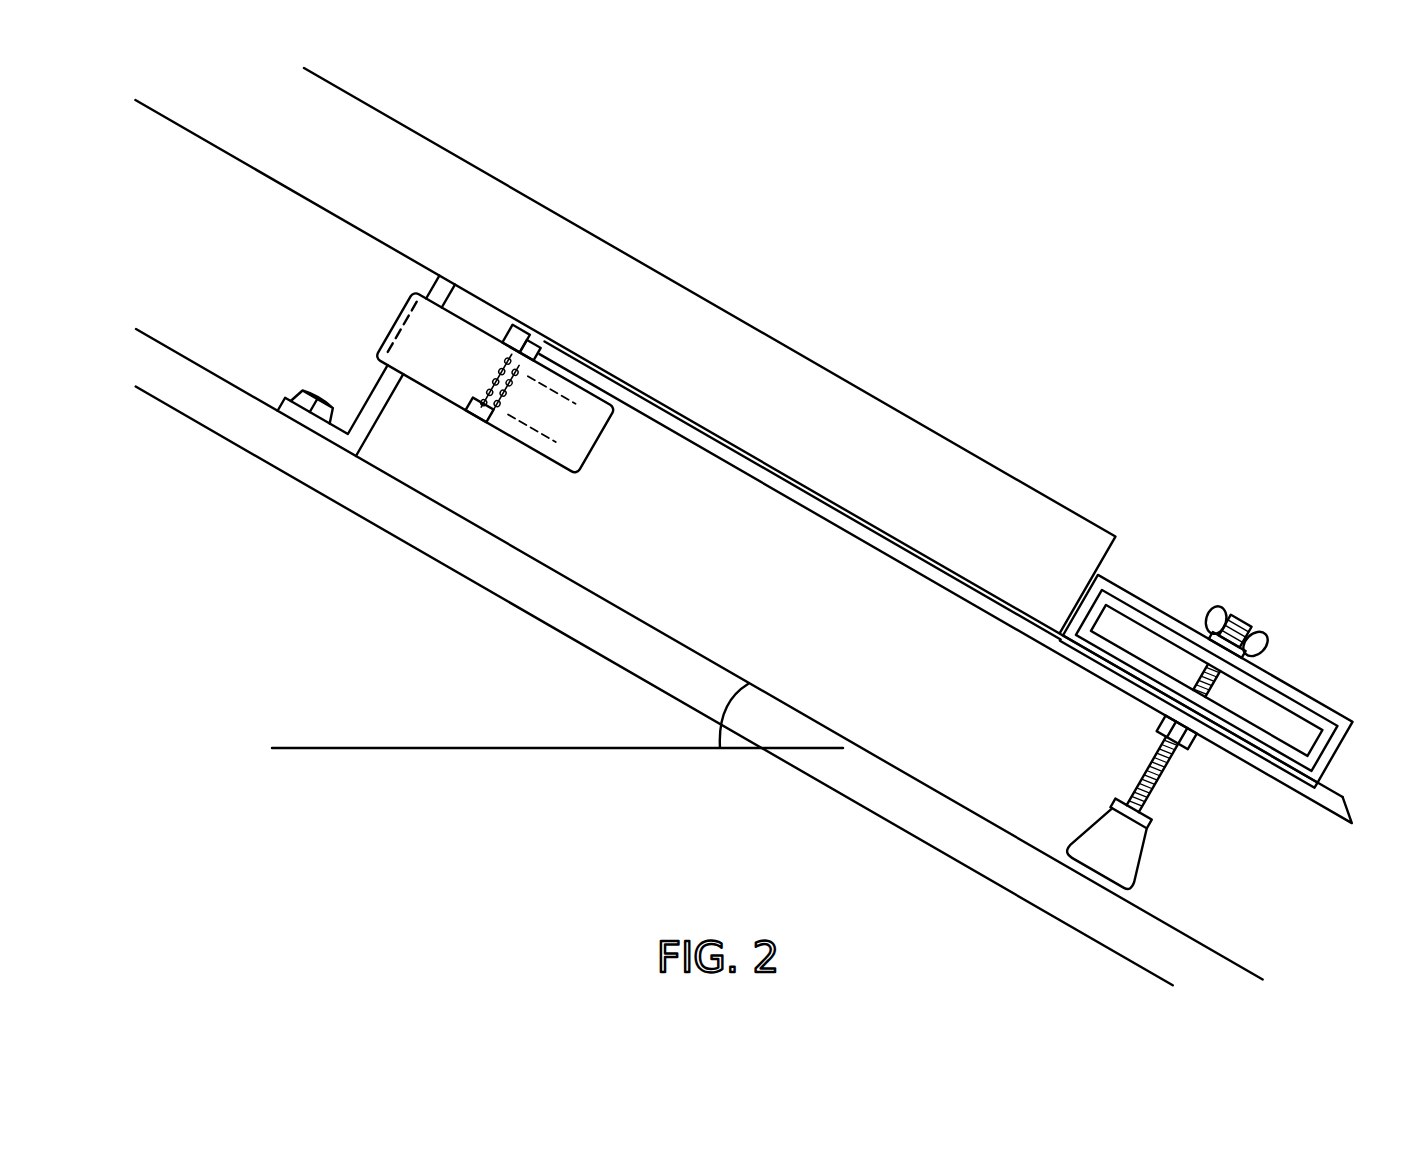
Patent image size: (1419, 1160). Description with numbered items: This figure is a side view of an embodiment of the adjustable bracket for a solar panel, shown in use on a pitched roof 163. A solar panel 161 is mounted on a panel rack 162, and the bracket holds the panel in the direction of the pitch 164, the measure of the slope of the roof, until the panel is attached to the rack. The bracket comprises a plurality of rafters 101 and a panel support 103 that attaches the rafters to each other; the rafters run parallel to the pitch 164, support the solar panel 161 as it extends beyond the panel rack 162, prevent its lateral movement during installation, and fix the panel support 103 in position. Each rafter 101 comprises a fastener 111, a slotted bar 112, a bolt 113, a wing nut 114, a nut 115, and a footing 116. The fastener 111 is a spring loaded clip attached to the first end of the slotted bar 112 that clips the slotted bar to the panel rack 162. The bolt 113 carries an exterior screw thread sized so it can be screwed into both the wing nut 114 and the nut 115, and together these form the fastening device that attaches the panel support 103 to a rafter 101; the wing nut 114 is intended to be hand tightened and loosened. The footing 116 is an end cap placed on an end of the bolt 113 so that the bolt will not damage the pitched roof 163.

The rafter 101 is at (1348, 806).
The panel support 103 is at (1150, 602).
The fastener 111 is at (587, 435).
The slotted bar 112 is at (797, 507).
The bolt 113 is at (1246, 614).
The wing nut 114 is at (1262, 642).
The nut 115 is at (1192, 742).
The footing 116 is at (1093, 838).
The solar panel 161 is at (893, 450).
The panel rack 162 is at (372, 400).
The pitched roof 163 is at (641, 613).
The pitch 164 is at (722, 722).